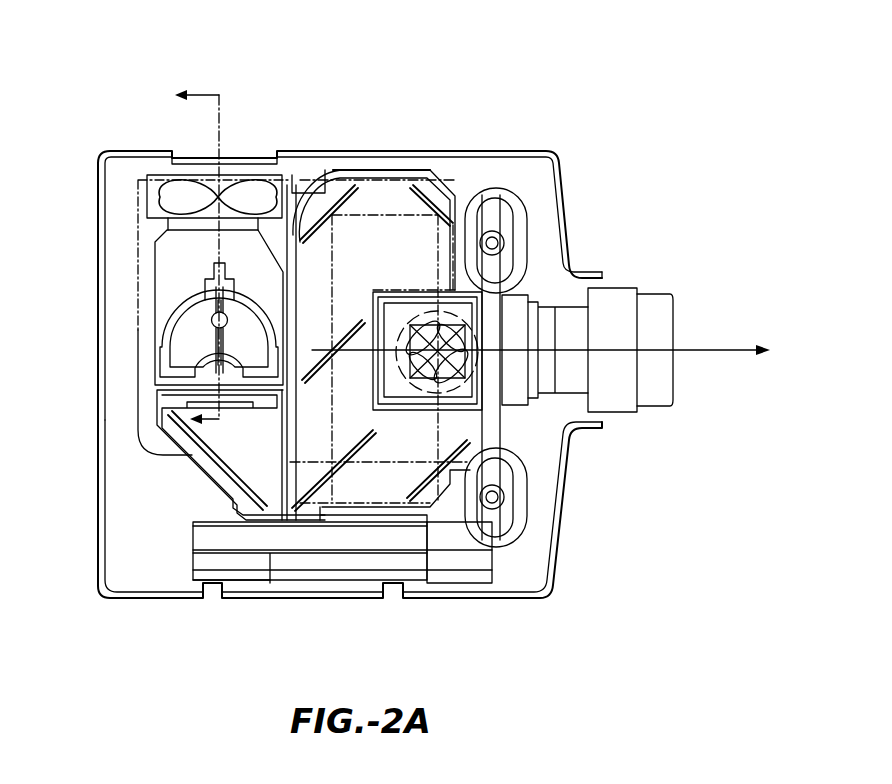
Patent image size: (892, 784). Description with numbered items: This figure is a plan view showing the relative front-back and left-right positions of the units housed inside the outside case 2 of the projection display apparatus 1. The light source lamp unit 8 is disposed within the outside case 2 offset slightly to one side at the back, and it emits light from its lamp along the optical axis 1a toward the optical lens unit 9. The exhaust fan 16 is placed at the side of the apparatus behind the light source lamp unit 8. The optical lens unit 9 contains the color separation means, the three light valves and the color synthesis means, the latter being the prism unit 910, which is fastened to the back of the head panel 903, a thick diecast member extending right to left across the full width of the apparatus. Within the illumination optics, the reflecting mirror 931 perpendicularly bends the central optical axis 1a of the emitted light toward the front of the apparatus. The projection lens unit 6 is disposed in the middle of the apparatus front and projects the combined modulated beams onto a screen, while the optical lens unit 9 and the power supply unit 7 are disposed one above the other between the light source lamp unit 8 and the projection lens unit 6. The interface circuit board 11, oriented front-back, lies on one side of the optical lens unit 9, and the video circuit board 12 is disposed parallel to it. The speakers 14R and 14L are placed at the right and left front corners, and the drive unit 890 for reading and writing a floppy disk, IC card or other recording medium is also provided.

The projection display apparatus 1 is at (547, 80).
The optical axis 1a is at (218, 377).
The outside case 2 is at (97, 245).
The projection lens unit 6 is at (615, 275).
The power supply unit 7 is at (538, 579).
The light source lamp unit 8 is at (270, 290).
The optical lens unit 9 is at (372, 162).
The interface circuit board 11 is at (463, 563).
The video circuit board 12 is at (360, 530).
The speaker 14R is at (520, 215).
The speaker 14L is at (523, 497).
The exhaust fan 16 is at (152, 190).
The drive unit 890 is at (256, 595).
The head panel 903 is at (513, 313).
The prism unit 910 is at (407, 307).
The reflecting mirror 931 is at (297, 505).